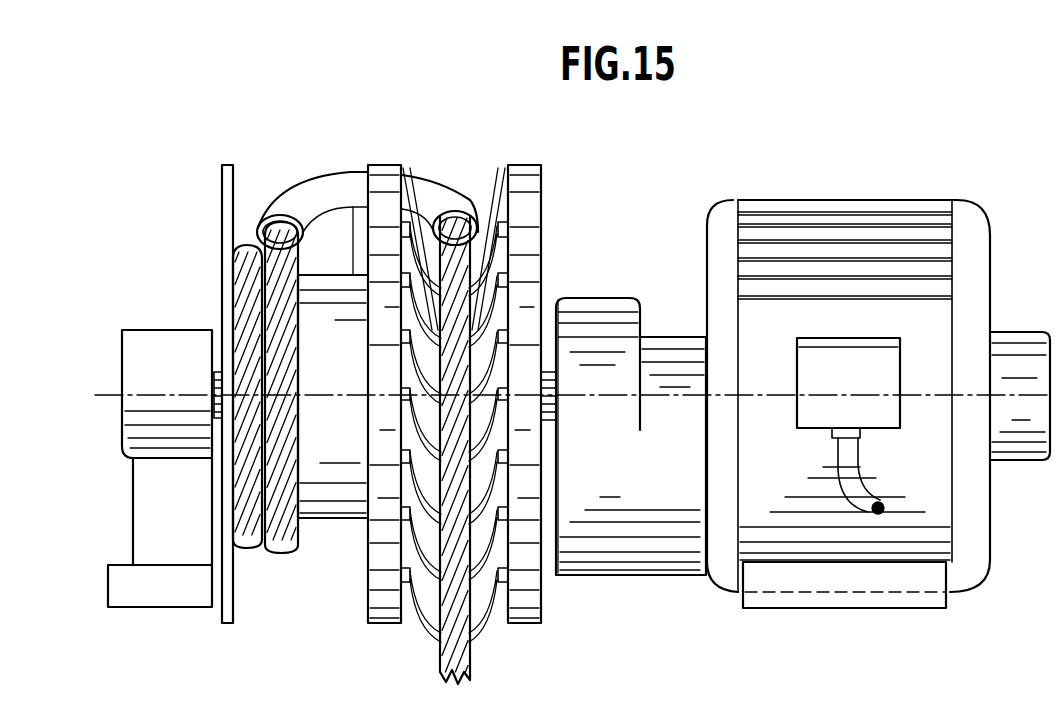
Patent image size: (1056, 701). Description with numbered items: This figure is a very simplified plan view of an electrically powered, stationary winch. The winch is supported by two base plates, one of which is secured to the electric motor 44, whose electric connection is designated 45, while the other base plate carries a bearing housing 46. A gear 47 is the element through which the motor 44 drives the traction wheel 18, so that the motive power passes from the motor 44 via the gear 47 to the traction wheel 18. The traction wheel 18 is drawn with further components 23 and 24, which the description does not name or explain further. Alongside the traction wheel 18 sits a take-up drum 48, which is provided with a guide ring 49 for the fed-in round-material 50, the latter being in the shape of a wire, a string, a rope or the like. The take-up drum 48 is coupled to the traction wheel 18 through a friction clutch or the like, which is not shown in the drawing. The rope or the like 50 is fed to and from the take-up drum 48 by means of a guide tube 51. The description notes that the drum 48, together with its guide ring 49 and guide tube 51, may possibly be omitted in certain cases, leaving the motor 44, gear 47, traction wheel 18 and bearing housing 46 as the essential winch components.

The traction wheel 18 is at (522, 635).
The drum flange discs 23 is at (528, 187).
The spokes 24 is at (502, 227).
The electric motor 44 is at (860, 218).
The electric connection 45 is at (883, 360).
The bearing housing 46 is at (168, 350).
The gear 47 is at (590, 315).
The take-up drum 48 is at (345, 495).
The guide ring 49 is at (228, 207).
The round-material 50 is at (243, 540).
The guide tube 51 is at (345, 180).